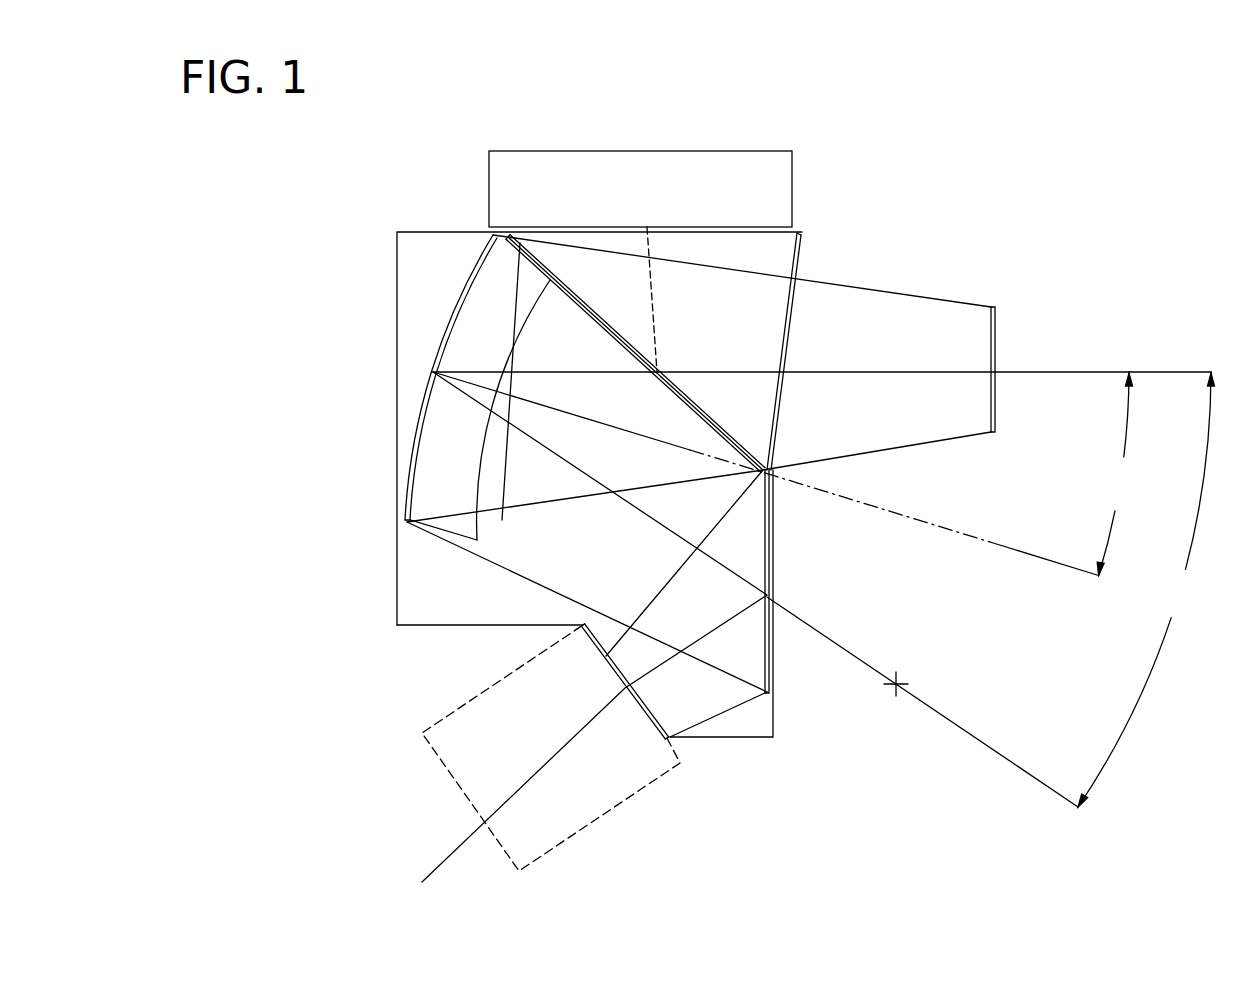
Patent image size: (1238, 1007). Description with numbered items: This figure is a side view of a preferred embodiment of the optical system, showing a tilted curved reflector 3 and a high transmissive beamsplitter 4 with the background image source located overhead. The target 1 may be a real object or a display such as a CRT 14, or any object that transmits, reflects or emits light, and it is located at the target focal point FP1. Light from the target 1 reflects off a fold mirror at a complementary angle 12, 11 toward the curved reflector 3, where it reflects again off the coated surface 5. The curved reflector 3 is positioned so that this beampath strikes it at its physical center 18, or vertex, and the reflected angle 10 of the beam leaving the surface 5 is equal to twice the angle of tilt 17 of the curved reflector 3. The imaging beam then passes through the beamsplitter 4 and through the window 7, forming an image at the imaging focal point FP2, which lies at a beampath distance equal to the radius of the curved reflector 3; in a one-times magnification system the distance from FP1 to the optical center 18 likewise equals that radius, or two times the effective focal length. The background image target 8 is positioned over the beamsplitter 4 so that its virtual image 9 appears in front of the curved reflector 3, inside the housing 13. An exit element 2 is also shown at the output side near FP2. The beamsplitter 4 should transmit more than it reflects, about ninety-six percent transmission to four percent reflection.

The target 1 is at (606, 667).
The exit window 2 is at (993, 304).
The curved reflector 3 is at (455, 313).
The beamsplitter 4 is at (586, 291).
The coated surface 5 is at (411, 470).
The window 7 is at (790, 275).
The background image target 8 is at (726, 224).
The virtual image 9 is at (500, 460).
The reflected angle 10 is at (991, 589).
The complementary angle 11 is at (735, 536).
The complementary angle 12 is at (709, 595).
The housing 13 is at (397, 579).
The CRT 14 is at (440, 718).
The angle of tilt 17 is at (795, 474).
The physical center 18 is at (431, 371).
The target focal point FP1 is at (422, 882).
The imaging focal point FP2 is at (1000, 362).